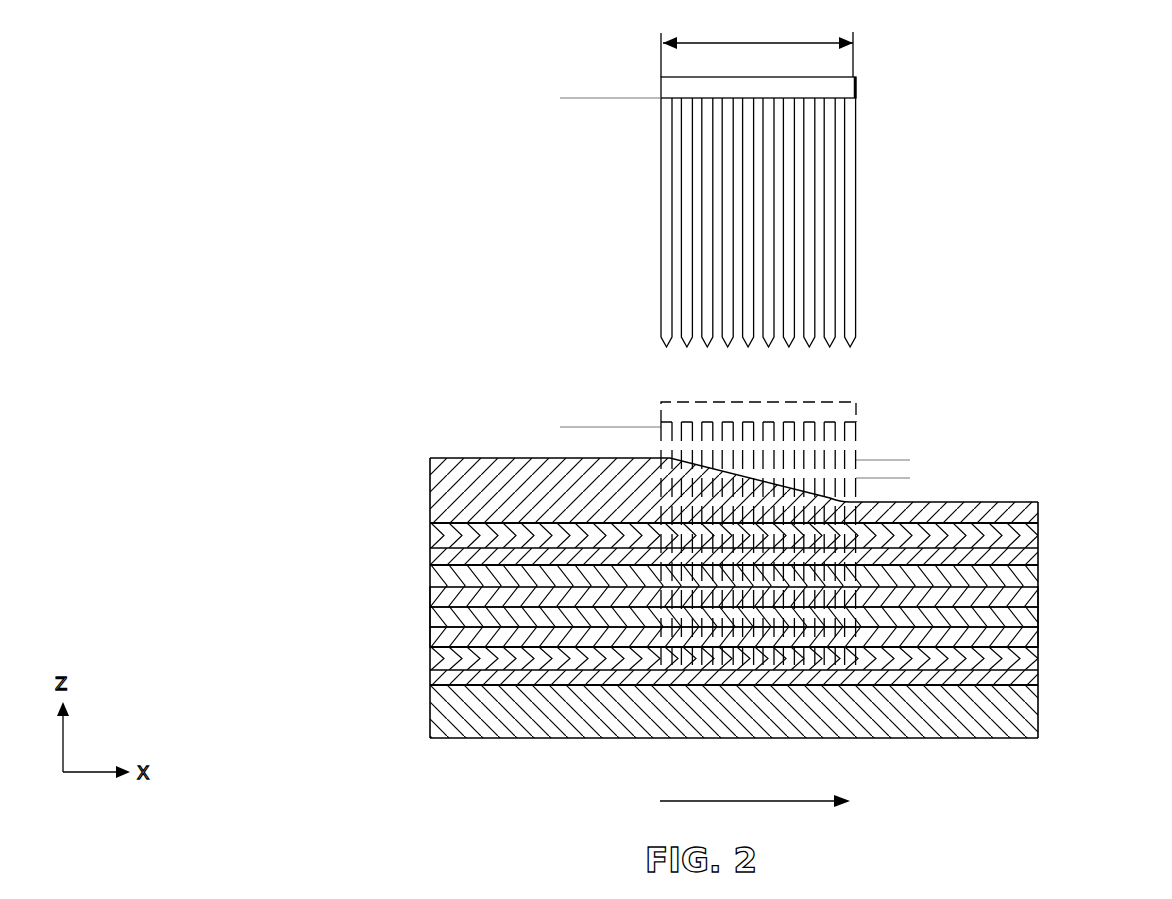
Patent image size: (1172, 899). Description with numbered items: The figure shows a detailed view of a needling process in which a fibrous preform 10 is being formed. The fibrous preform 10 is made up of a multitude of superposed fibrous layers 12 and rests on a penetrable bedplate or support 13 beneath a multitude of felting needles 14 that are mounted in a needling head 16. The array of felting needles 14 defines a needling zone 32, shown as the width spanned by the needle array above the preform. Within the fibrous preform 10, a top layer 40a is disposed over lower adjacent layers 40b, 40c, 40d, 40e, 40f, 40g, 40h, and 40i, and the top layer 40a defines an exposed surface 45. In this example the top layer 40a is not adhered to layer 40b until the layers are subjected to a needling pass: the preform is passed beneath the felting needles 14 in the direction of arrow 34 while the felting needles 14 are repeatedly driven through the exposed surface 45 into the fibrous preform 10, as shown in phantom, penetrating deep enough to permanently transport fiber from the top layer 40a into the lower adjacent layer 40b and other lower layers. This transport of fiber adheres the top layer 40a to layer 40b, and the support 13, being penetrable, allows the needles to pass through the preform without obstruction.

The fibrous preform 10 is at (196, 590).
The fibrous layers 12 is at (730, 611).
The support 13 is at (515, 738).
The felting needles 14 is at (882, 235).
The needling head 16 is at (857, 88).
The needling zone 32 is at (773, 42).
The arrow 34 is at (803, 797).
The exposed surface 45 is at (478, 456).
The top layer 40a is at (430, 470).
The lower adjacent layer 40b is at (432, 535).
The lower adjacent layer 40c is at (430, 555).
The lower adjacent layer 40d is at (432, 575).
The lower adjacent layer 40e is at (430, 597).
The lower adjacent layer 40f is at (432, 615).
The lower adjacent layer 40g is at (430, 637).
The lower adjacent layer 40h is at (432, 657).
The lower adjacent layer 40i is at (430, 677).